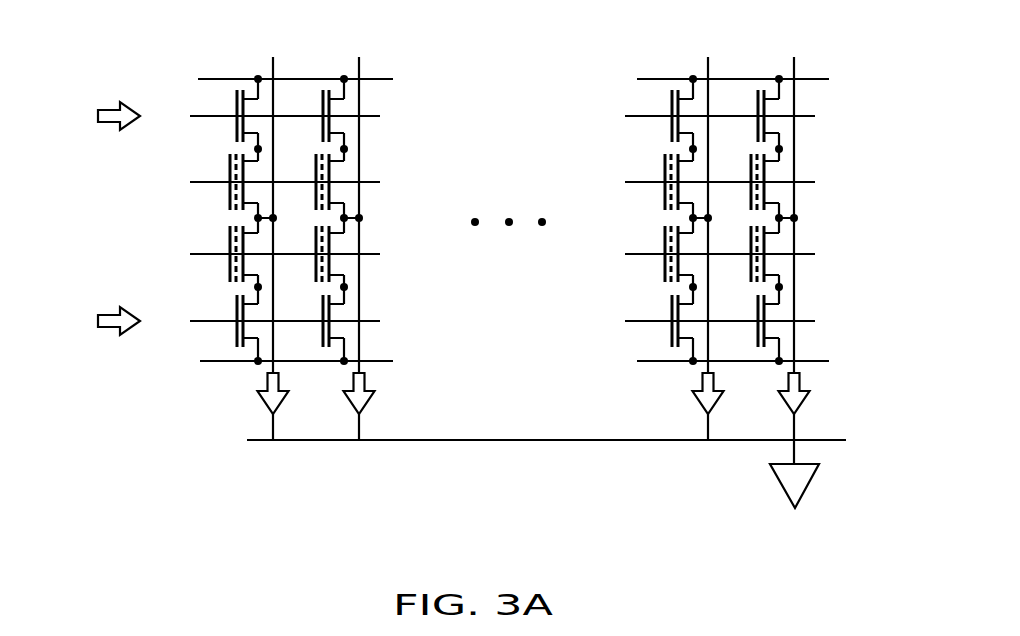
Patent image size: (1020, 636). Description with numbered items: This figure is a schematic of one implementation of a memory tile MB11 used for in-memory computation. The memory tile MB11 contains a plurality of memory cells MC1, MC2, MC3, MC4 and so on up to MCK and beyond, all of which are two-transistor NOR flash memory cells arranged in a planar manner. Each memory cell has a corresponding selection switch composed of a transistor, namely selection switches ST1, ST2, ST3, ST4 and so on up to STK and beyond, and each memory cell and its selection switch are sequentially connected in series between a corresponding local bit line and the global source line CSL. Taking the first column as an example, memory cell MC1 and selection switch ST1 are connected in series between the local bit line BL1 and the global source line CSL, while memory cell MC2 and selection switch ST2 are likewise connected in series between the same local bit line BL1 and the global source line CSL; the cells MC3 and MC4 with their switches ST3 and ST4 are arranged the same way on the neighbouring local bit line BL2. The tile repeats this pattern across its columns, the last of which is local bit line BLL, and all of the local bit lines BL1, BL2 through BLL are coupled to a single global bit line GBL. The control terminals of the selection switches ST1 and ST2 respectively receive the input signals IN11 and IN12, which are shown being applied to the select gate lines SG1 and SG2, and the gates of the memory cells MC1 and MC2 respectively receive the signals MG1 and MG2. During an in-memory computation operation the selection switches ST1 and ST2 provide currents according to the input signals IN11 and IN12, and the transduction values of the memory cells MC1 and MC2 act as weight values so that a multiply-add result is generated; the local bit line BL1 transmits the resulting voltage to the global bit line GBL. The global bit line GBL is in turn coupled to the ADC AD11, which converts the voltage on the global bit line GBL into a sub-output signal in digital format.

The global source line CSL is at (492, 221).
The first select gate line SG1 is at (482, 118).
The second select gate line SG2 is at (482, 322).
The signal MG1 is at (481, 182).
The signal MG2 is at (481, 254).
The input signal IN11 is at (94, 118).
The input signal IN12 is at (94, 322).
The local bit line BL1 is at (273, 231).
The local bit line BL2 is at (360, 231).
The local bit line BLL is at (795, 231).
The selection switch ST1 is at (236, 100).
The selection switch ST2 is at (236, 338).
The selection switch ST3 is at (343, 108).
The selection switch ST4 is at (343, 312).
The memory cell MC1 is at (230, 199).
The memory cell MC2 is at (230, 270).
The memory cell MC3 is at (343, 173).
The memory cell MC4 is at (343, 248).
The selection switch STK is at (778, 108).
The memory cell MCK is at (778, 172).
The global bit line GBL is at (545, 442).
The ADC AD11 is at (782, 487).
The memory tile MB11 is at (914, 558).